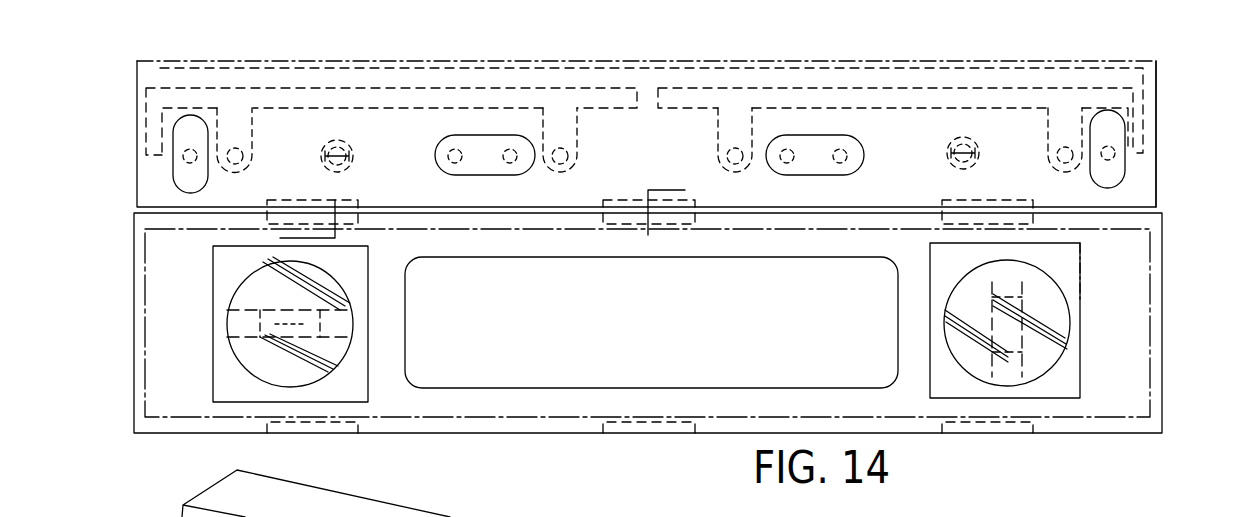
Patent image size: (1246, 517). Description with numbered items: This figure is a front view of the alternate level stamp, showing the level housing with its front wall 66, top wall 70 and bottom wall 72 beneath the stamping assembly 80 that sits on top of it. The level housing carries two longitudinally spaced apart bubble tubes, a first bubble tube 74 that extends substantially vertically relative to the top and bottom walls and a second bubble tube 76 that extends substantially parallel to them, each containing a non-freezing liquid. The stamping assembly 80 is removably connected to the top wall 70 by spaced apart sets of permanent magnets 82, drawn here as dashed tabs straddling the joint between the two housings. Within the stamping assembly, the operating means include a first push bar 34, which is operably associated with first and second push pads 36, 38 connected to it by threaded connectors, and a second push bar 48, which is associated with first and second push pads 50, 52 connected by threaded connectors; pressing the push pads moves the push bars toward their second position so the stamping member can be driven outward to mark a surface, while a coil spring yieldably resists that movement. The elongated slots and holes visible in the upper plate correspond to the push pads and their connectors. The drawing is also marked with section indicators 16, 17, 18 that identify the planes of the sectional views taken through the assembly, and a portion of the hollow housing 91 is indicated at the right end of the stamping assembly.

The section line 16- 16 is at (735, 48).
The section line 17- 17 is at (782, 190).
The section line 18- 18 is at (928, 33).
The first push bar 34 is at (318, 97).
The first push pad 36 is at (207, 190).
The second push pad 38 is at (483, 172).
The second push bar 48 is at (993, 95).
The first push pad 50 is at (1100, 168).
The second push pad 52 is at (828, 147).
The front wall 66 is at (488, 441).
The top wall 70 is at (1153, 207).
The bottom wall 72 is at (957, 433).
The first bubble tube 74 is at (1018, 313).
The second bubble tube 76 is at (310, 337).
The stamping assembly 80 is at (475, 49).
The permanent magnets 82 is at (317, 205).
The plate 91 is at (1140, 170).